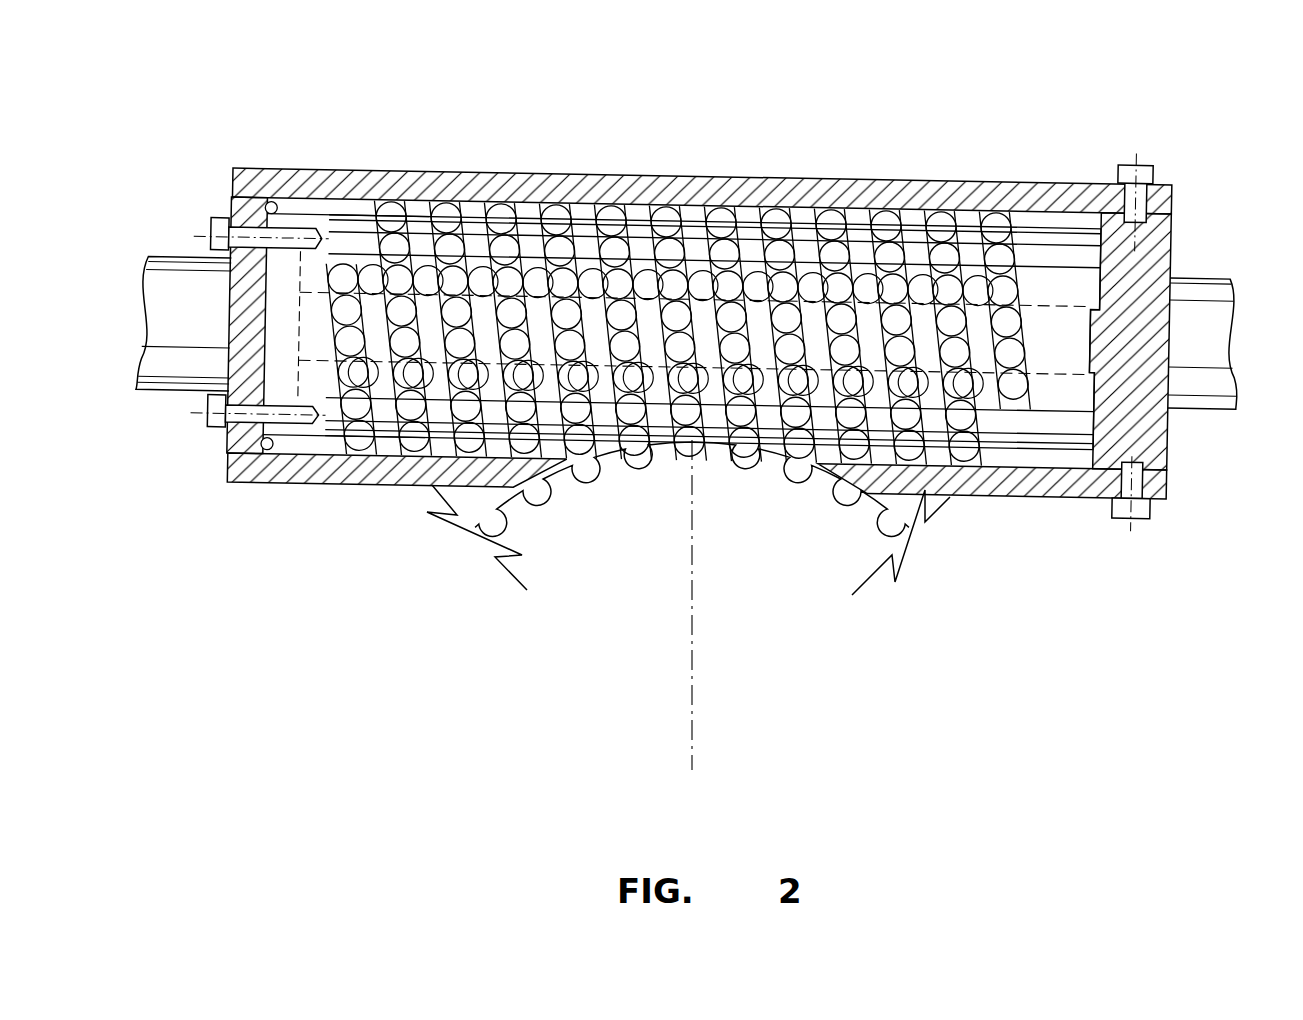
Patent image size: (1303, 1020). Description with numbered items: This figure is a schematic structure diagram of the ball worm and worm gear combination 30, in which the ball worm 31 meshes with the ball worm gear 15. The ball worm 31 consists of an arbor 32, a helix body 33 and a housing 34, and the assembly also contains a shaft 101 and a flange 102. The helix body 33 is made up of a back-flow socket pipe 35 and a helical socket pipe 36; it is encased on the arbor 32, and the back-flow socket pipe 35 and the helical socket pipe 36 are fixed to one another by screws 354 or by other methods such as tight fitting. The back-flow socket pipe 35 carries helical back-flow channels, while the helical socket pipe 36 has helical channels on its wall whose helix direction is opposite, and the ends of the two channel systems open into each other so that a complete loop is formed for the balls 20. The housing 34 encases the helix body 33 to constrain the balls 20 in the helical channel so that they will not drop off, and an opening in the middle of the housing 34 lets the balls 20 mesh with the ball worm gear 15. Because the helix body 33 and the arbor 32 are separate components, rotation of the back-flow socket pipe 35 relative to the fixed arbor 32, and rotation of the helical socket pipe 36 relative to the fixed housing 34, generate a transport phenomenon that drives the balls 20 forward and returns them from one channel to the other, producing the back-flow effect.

The ball worm 31 is at (422, 148).
The housing 34 is at (918, 192).
The shaft 101 is at (182, 255).
The arbor 32 is at (318, 340).
The flange 102 is at (298, 212).
The screws 354 is at (225, 233).
The helix body 33 is at (1072, 424).
The helical socket pipe 36 is at (633, 220).
The back-flow socket pipe 35 is at (375, 265).
The balls 20 is at (712, 225).
The ball worm and worm gear combination 30 is at (505, 492).
The ball worm gear 15 is at (847, 562).